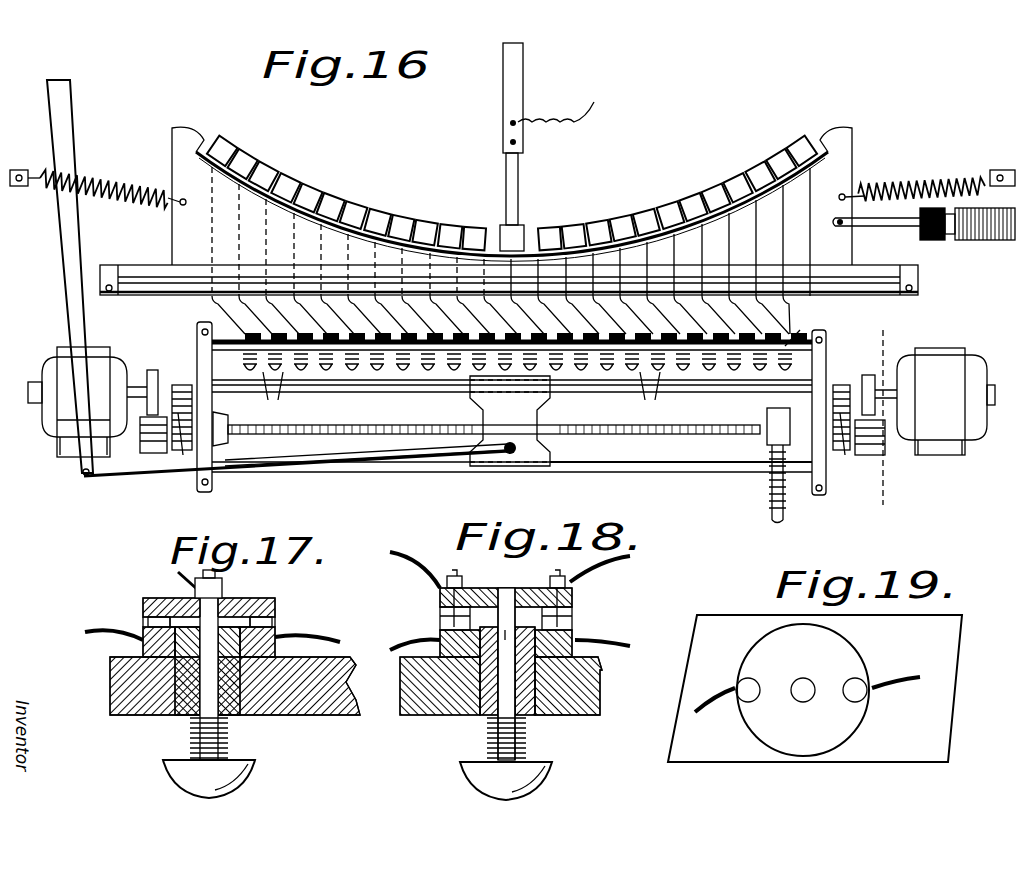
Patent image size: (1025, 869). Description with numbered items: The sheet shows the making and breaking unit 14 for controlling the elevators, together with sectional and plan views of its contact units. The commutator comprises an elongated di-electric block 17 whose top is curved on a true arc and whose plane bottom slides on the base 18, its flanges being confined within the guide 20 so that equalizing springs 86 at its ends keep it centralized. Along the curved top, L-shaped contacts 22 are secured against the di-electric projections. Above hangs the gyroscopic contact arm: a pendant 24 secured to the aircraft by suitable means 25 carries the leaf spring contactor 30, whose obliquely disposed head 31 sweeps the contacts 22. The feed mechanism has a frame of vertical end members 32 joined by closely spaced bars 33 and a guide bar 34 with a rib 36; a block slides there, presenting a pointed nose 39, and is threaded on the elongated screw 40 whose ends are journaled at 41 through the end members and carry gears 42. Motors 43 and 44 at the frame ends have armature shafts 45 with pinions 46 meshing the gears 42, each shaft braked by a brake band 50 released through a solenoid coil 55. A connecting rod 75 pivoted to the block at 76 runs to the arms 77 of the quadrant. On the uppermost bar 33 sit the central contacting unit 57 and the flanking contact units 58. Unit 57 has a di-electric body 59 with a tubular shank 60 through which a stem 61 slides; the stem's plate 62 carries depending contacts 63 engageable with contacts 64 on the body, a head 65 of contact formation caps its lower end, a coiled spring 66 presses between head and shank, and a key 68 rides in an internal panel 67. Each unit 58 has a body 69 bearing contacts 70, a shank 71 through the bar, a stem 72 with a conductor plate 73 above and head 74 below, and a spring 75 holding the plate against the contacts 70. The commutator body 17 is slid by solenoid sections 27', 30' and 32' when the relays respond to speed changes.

In FIG. 16, the unit 14 is at (397, 183).
In FIG. 17, the unit 14 is at (245, 775).
In FIG. 16, the block 17 is at (170, 160).
In FIG. 16, the base 18 is at (175, 285).
In FIG. 16, the guide 20 is at (833, 423).
In FIG. 16, the L-shaped contact 22 is at (310, 215).
In FIG. 16, the pendant 24 is at (520, 88).
In FIG. 16, the securing means 25 is at (930, 240).
In FIG. 16, the solenoid section 27' is at (900, 246).
In FIG. 16, the leaf spring contactor 30 is at (535, 189).
In FIG. 16, the solenoid section 30' is at (969, 251).
In FIG. 16, the head 31 is at (515, 235).
In FIG. 16, the vertical end member 32 is at (512, 408).
In FIG. 16, the solenoid section 32' is at (988, 237).
In FIG. 16, the bar 33 is at (800, 330).
In FIG. 17, the bar 33 is at (328, 715).
In FIG. 19, the bar 33 is at (945, 668).
In FIG. 16, the guide bar 34 is at (400, 470).
In FIG. 16, the rib 36 is at (620, 470).
In FIG. 16, the pointed nose 39 is at (475, 395).
In FIG. 16, the screw 40 is at (318, 412).
In FIG. 16, the journaled screw end 41 is at (228, 428).
In FIG. 16, the gear 42 is at (182, 458).
In FIG. 16, the motor 43 is at (45, 360).
In FIG. 16, the motor 44 is at (935, 358).
In FIG. 16, the armature shaft 45 is at (145, 385).
In FIG. 16, the pinion 46 is at (180, 388).
In FIG. 16, the brake band 50 is at (150, 430).
In FIG. 16, the solenoid coil 55 is at (148, 455).
In FIG. 18, the contacting unit 57 is at (616, 605).
In FIG. 16, the contact unit 58 is at (387, 381).
In FIG. 17, the contact unit 58 is at (295, 595).
In FIG. 18, the di-electric body 59 is at (575, 640).
In FIG. 18, the tubular shank 60 is at (470, 712).
In FIG. 18, the stem 61 is at (535, 712).
In FIG. 18, the plate 62 is at (482, 598).
In FIG. 18, the depending contact 63 is at (445, 610).
In FIG. 18, the contact 64 is at (452, 622).
In FIG. 18, the head 65 is at (552, 768).
In FIG. 18, the compressible coiled spring 66 is at (487, 738).
In FIG. 18, the internal panel 67 is at (525, 588).
In FIG. 18, the key 68 is at (598, 672).
In FIG. 17, the body 69 is at (143, 648).
In FIG. 19, the body 69 is at (760, 655).
In FIG. 17, the contact 70 is at (150, 622).
In FIG. 19, the contact 70 is at (755, 688).
In FIG. 17, the shank 71 is at (178, 712).
In FIG. 17, the stem 72 is at (215, 620).
In FIG. 17, the conductor plate 73 is at (160, 590).
In FIG. 16, the head 74 is at (278, 400).
In FIG. 16, the spring 75 is at (322, 465).
In FIG. 17, the spring 75 is at (228, 750).
In FIG. 16, the pivot 76 is at (515, 452).
In FIG. 16, the arm 77 is at (62, 252).
In FIG. 16, the equalizing spring 86 is at (85, 195).